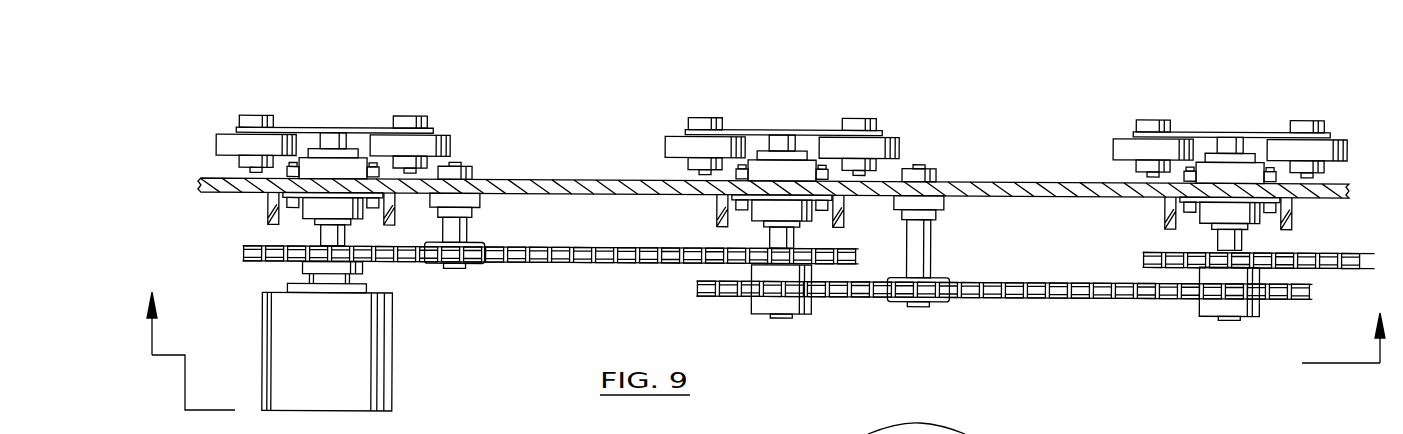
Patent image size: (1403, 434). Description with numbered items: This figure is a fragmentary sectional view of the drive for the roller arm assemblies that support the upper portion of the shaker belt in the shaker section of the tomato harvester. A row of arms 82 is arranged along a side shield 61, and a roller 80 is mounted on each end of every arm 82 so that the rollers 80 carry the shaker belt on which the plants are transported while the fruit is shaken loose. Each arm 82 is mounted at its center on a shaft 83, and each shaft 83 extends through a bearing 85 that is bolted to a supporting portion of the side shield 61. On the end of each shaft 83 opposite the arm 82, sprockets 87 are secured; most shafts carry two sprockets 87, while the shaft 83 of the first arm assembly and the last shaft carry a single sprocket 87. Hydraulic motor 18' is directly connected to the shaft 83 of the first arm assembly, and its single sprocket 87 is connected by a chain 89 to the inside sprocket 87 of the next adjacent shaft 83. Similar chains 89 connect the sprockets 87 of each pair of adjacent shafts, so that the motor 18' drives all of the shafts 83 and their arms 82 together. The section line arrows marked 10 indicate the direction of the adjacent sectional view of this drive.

The section line arrows (view 10-10) 10 is at (766, 351).
The hydraulic motor 18' is at (327, 342).
The side shield 61 is at (1040, 187).
The roller 80 is at (233, 143).
The arm 82 is at (367, 123).
The shaft 83 is at (325, 140).
The bearing 85 is at (312, 212).
The sprocket 87 is at (347, 263).
The chain 89 is at (593, 263).